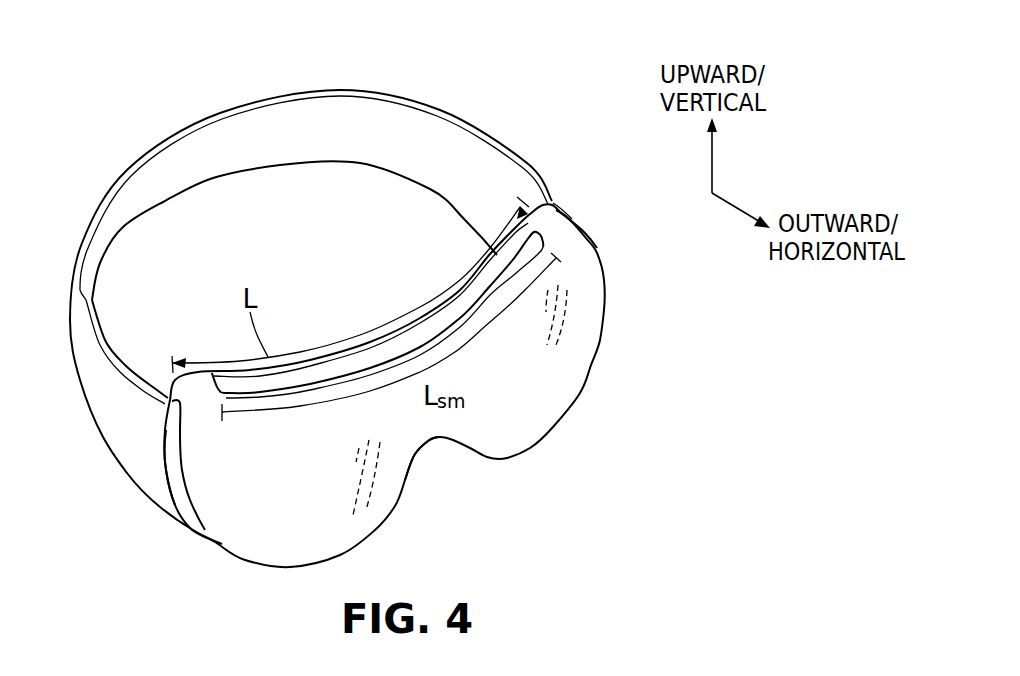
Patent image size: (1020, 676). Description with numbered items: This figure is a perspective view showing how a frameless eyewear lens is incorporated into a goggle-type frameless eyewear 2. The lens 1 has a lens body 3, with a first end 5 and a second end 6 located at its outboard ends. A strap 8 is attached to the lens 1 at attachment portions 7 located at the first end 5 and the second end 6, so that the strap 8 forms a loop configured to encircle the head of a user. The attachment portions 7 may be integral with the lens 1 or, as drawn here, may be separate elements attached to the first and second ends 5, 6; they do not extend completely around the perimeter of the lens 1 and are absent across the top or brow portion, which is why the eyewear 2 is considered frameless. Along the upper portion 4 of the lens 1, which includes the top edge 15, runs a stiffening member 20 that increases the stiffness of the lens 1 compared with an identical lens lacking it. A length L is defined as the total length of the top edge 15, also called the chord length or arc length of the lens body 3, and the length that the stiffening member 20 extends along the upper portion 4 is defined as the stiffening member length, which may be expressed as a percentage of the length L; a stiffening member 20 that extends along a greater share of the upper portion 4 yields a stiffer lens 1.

The lens 1 is at (618, 380).
The frameless eyewear 2 is at (544, 124).
The lens body 3 is at (400, 463).
The upper portion 4 is at (198, 372).
The first end 5 is at (167, 455).
The second end 6 is at (598, 242).
The attachment portions 7 is at (573, 213).
The strap 8 is at (445, 112).
The top edge 15 is at (337, 357).
The stiffening member 20 is at (427, 325).